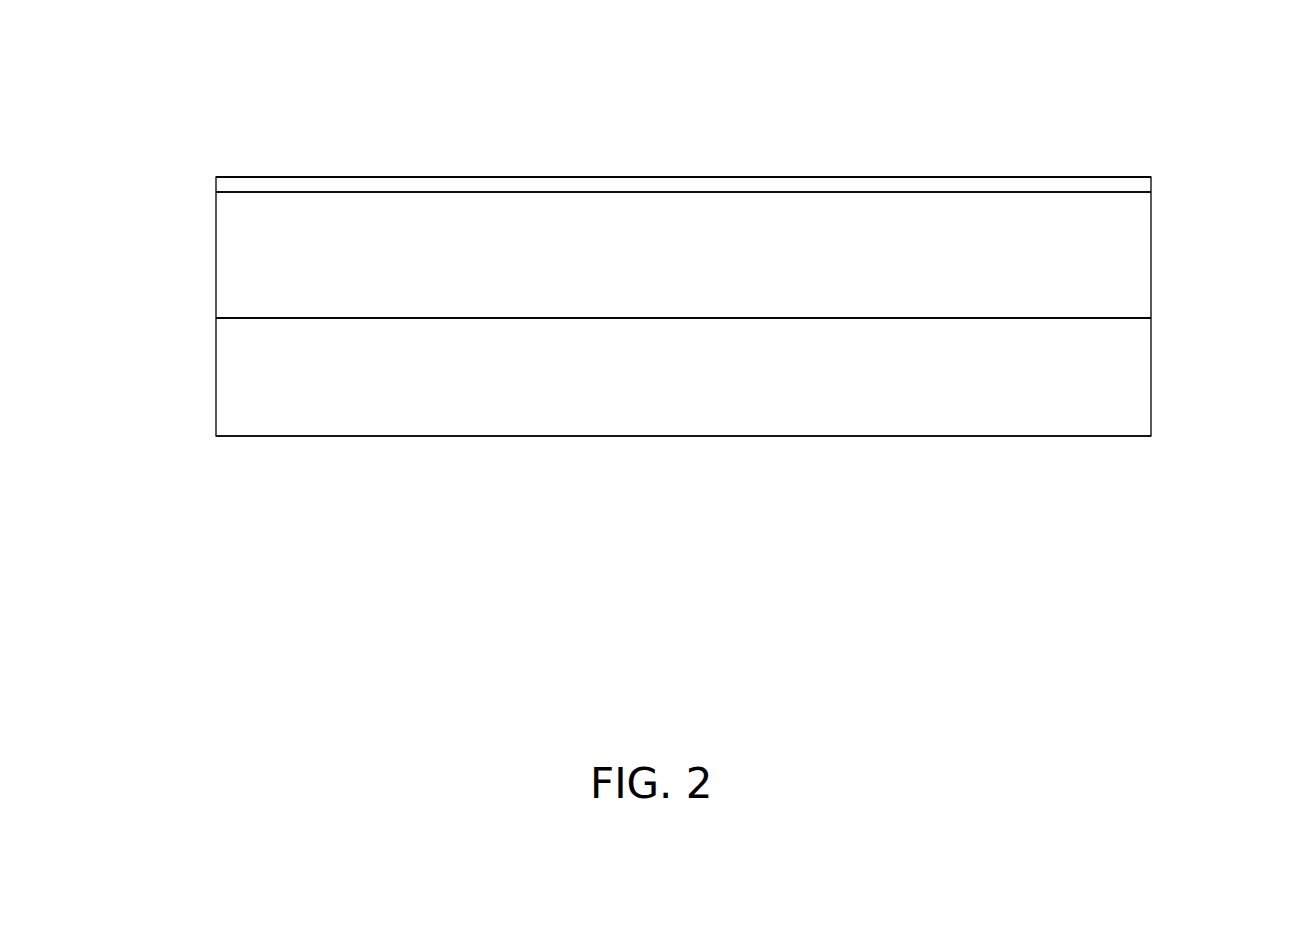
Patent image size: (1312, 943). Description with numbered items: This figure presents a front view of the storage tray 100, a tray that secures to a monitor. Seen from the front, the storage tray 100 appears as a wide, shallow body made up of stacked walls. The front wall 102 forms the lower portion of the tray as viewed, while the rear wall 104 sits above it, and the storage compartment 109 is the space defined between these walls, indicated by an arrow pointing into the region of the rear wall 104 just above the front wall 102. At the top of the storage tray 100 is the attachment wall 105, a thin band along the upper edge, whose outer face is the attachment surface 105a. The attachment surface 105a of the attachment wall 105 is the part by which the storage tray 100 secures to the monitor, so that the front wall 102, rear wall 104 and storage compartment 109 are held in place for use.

The storage tray 100 is at (1187, 136).
The front wall 102 is at (616, 397).
The rear wall 104 is at (263, 265).
The attachment wall 105 is at (653, 185).
The attachment surface 105a is at (686, 170).
The storage compartment 109 is at (322, 288).